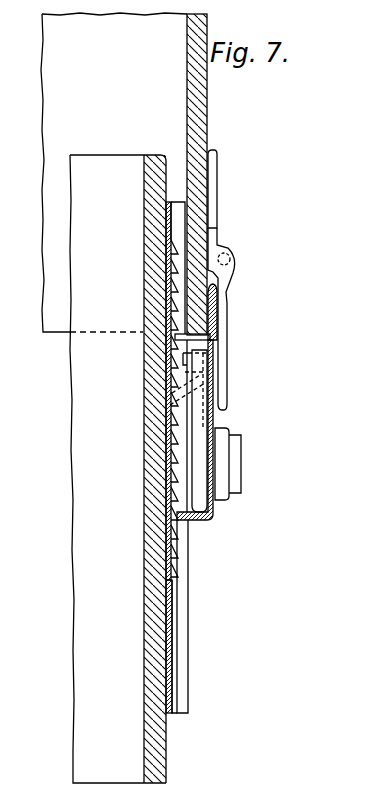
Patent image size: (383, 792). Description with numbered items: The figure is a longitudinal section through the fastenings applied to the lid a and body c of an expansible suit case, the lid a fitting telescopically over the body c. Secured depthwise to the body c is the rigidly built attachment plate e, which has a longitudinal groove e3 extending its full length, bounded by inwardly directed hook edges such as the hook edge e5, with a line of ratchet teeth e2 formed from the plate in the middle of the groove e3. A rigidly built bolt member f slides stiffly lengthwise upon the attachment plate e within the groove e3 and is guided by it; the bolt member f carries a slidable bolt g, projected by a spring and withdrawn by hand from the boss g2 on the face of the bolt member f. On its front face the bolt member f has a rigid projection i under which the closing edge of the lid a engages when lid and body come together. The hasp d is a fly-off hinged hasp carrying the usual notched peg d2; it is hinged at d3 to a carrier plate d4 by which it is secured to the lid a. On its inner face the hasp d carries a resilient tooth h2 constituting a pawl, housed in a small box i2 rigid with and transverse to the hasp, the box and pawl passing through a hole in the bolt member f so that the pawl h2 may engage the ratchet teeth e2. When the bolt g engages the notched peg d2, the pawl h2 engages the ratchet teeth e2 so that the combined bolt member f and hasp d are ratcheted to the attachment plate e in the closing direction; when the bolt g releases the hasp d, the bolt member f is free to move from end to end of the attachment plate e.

The lid a is at (197, 97).
The body c is at (157, 576).
The hasp d is at (224, 370).
The notched peg d2 is at (165, 402).
The hinge d3 is at (227, 252).
The carrier plate d4 is at (212, 192).
The attachment plate e is at (168, 469).
The ratchet teeth e2 is at (167, 452).
The longitudinal groove e3 is at (175, 632).
The hook edge e5 is at (182, 610).
The bolt member f is at (213, 422).
The bolt g is at (168, 415).
The boss g2 is at (237, 462).
The resilient tooth h2 is at (167, 363).
The rigid projection i is at (211, 325).
The small box i2 is at (170, 380).